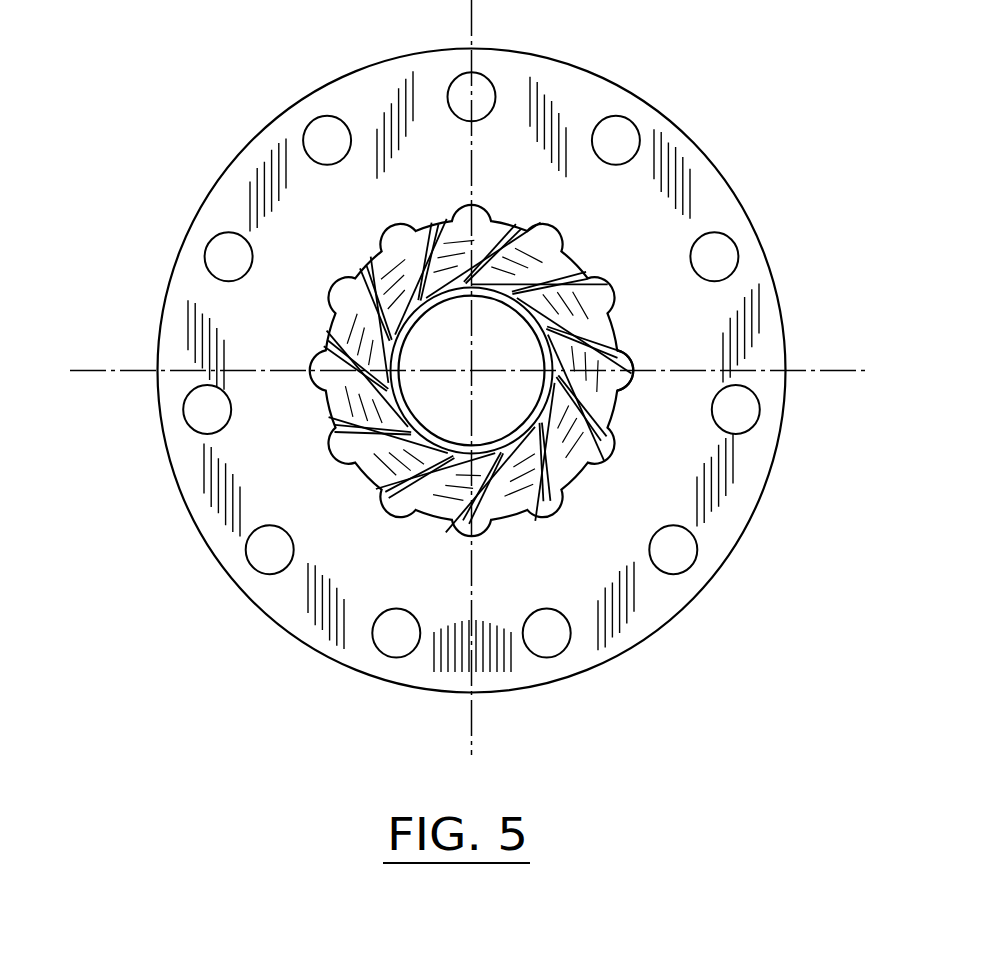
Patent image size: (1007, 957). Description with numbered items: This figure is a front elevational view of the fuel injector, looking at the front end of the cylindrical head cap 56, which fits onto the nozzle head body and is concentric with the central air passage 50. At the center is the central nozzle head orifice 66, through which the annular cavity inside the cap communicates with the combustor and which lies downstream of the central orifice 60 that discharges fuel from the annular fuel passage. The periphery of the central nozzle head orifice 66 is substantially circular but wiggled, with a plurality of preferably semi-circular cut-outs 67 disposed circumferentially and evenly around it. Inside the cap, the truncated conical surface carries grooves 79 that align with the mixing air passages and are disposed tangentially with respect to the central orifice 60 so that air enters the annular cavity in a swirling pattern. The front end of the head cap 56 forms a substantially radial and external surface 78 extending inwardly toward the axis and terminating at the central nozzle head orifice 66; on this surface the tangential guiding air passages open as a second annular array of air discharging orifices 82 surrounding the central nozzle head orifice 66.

The central air passage 50 is at (467, 363).
The cylindrical head cap 56 is at (702, 592).
The central orifice 60 is at (568, 465).
The central nozzle head orifice 66 is at (612, 393).
The cut-outs 67 is at (633, 357).
The substantially radial and external surface 78 is at (295, 592).
The grooves 79 is at (338, 310).
The second annular array of air discharging orifices 82 is at (736, 243).